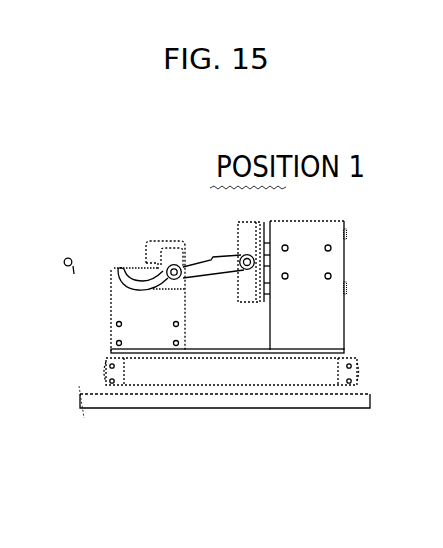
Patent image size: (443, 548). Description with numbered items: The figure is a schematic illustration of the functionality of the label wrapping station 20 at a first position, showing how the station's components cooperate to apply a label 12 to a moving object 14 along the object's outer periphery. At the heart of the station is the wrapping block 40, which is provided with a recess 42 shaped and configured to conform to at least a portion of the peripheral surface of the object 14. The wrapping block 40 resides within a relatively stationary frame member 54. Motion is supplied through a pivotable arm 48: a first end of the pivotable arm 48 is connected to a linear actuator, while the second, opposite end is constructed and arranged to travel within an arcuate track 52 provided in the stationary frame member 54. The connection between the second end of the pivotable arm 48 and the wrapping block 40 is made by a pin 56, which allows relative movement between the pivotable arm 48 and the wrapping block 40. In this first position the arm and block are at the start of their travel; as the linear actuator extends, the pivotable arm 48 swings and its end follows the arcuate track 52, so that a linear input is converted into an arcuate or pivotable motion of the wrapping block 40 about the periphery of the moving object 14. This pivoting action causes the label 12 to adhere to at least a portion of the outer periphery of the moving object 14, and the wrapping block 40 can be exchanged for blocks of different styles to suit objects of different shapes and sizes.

The label 12 is at (63, 268).
The moving object 14 is at (62, 249).
The label wrapping station 20 is at (365, 192).
The wrapping block 40 is at (120, 305).
The recess 42 is at (122, 293).
The pivotable arm 48 is at (192, 268).
The arcuate track 52 is at (118, 307).
The stationary frame member 54 is at (141, 318).
The pin 56 is at (167, 272).